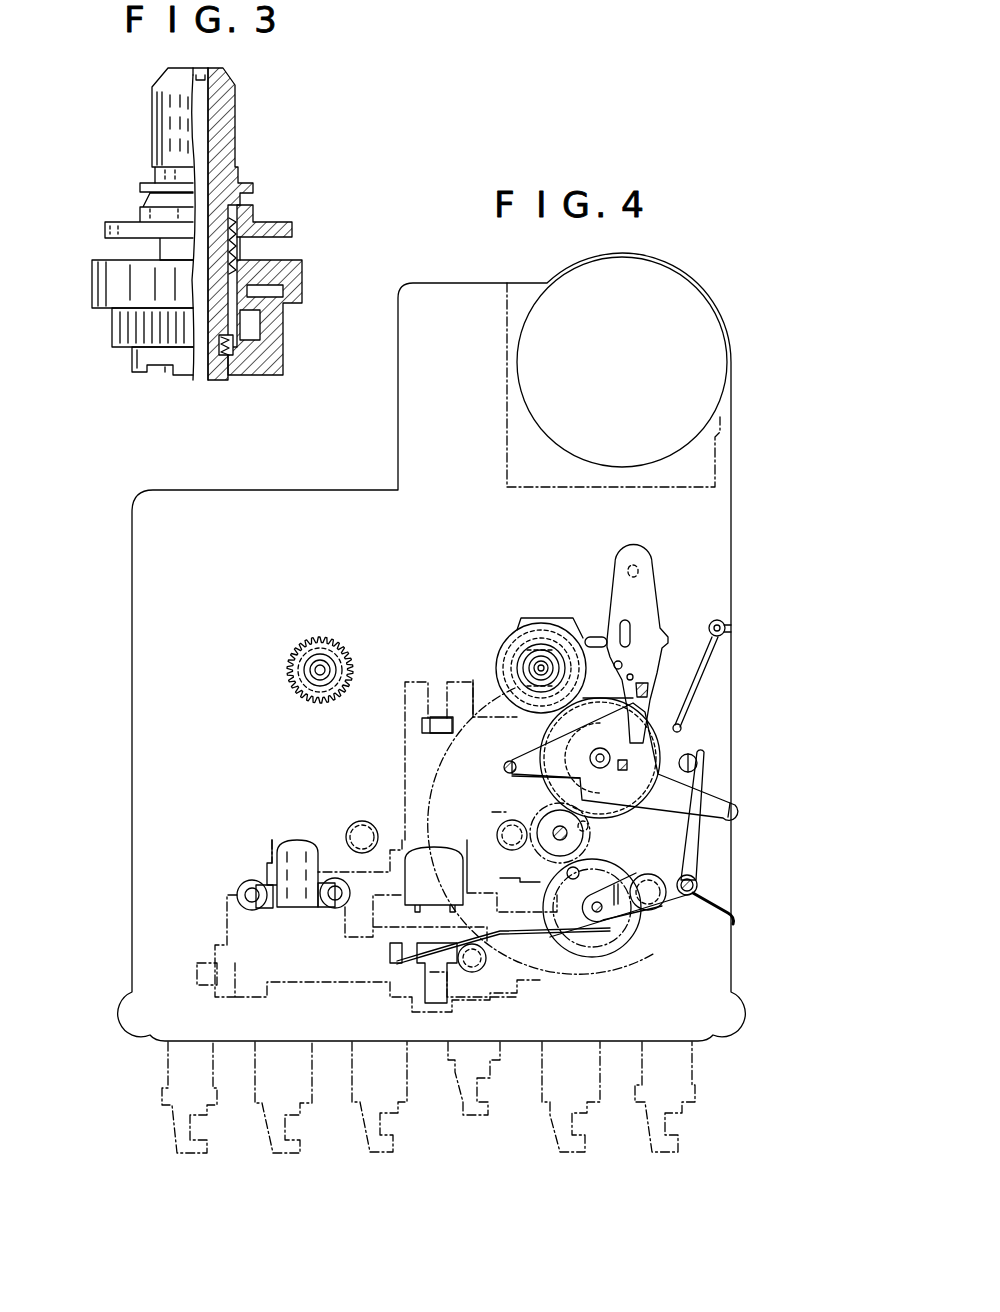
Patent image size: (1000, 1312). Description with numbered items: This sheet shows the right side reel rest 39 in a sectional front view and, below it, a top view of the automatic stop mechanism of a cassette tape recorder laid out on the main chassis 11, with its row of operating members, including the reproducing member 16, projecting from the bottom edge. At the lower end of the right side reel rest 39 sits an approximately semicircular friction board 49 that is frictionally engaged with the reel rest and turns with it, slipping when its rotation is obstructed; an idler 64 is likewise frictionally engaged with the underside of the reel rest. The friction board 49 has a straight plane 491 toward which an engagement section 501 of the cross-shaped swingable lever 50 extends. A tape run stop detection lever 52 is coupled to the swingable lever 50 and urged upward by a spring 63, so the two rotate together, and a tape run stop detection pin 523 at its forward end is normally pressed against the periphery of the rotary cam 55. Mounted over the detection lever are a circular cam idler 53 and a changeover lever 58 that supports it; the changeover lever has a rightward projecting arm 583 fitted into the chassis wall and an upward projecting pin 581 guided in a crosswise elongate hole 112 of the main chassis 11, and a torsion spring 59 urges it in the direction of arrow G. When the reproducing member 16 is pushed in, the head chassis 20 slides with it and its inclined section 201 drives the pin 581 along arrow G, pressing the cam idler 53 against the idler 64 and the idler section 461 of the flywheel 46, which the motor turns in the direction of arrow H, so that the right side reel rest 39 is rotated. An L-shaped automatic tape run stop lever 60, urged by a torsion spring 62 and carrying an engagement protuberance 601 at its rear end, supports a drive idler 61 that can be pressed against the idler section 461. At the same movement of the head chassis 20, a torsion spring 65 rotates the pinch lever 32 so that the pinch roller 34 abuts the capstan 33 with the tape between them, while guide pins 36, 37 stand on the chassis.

In FIG. 4, the main chassis 11 is at (740, 531).
In FIG. 4, the reproducing member 16 is at (490, 1106).
In FIG. 4, the head chassis 20 is at (403, 757).
In FIG. 4, the pinch lever 32 is at (580, 953).
In FIG. 4, the capstan 33 is at (552, 845).
In FIG. 4, the pinch roller 34 is at (511, 873).
In FIG. 4, the guide pin 36 is at (371, 818).
In FIG. 4, the guide pin 37 is at (497, 835).
In FIG. 3, the right side reel rest 39 is at (245, 84).
In FIG. 4, the right side reel rest 39 is at (562, 672).
In FIG. 4, the flywheel 46 is at (667, 942).
In FIG. 3, the friction board 49 is at (129, 360).
In FIG. 4, the friction board 49 is at (504, 667).
In FIG. 4, the swingable lever 50 is at (560, 616).
In FIG. 4, the tape run stop detection lever 52 is at (651, 620).
In FIG. 4, the cam idler 53 is at (553, 825).
In FIG. 4, the rotary cam 55 is at (540, 745).
In FIG. 4, the changeover lever 58 is at (668, 806).
In FIG. 4, the torsion spring 59 is at (694, 690).
In FIG. 4, the automatic tape run stop lever 60 is at (707, 855).
In FIG. 4, the drive idler 61 is at (578, 960).
In FIG. 4, the torsion spring 62 is at (718, 905).
In FIG. 4, the spring 63 is at (646, 680).
In FIG. 3, the idler 64 is at (88, 296).
In FIG. 4, the idler 64 is at (507, 683).
In FIG. 4, the torsion spring 65 is at (558, 941).
In FIG. 4, the elongate hole 112 is at (522, 744).
In FIG. 4, the inclined section 201 is at (503, 767).
In FIG. 4, the idler section 461 is at (583, 826).
In FIG. 4, the straight plane 491 is at (507, 640).
In FIG. 4, the engagement section 501 is at (516, 630).
In FIG. 4, the tape run stop detection pin 523 is at (622, 781).
In FIG. 4, the upward projecting pin 581 is at (505, 778).
In FIG. 4, the rightward projecting arm 583 is at (732, 800).
In FIG. 4, the engagement protuberance 601 is at (693, 752).
In FIG. 4, the arrow G is at (500, 800).
In FIG. 4, the arrow H is at (560, 822).